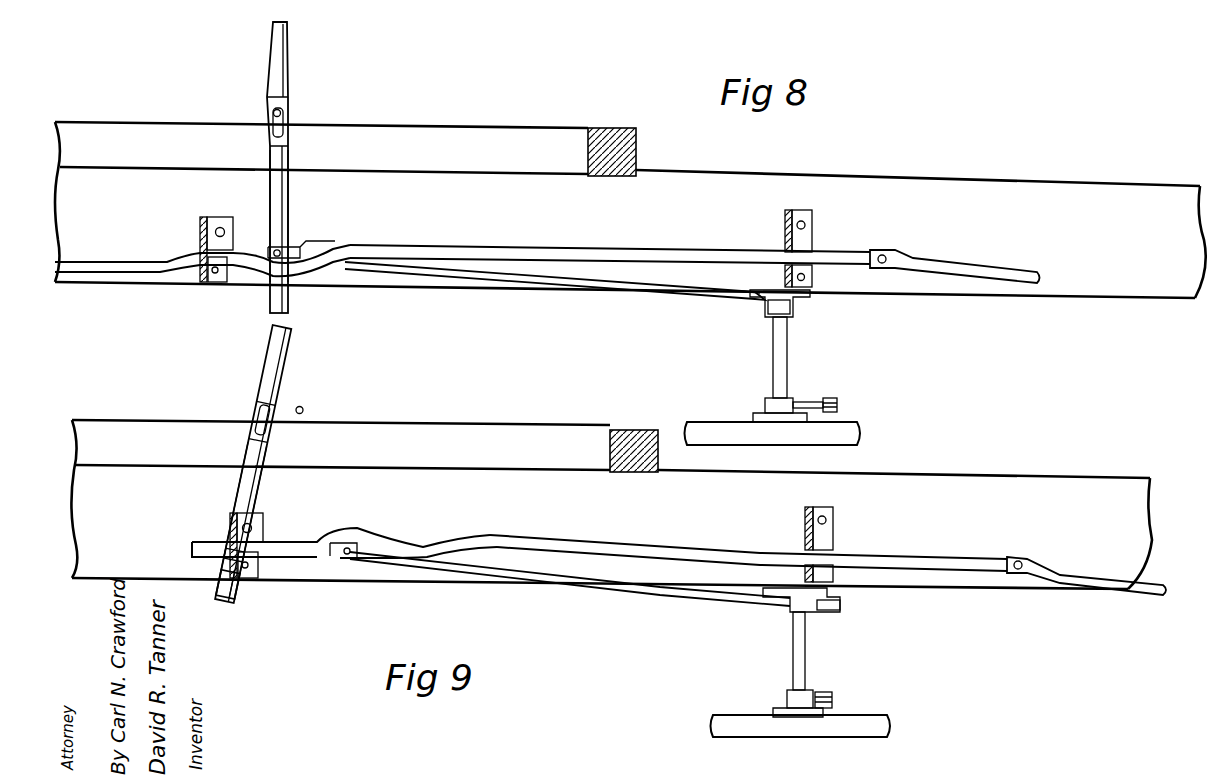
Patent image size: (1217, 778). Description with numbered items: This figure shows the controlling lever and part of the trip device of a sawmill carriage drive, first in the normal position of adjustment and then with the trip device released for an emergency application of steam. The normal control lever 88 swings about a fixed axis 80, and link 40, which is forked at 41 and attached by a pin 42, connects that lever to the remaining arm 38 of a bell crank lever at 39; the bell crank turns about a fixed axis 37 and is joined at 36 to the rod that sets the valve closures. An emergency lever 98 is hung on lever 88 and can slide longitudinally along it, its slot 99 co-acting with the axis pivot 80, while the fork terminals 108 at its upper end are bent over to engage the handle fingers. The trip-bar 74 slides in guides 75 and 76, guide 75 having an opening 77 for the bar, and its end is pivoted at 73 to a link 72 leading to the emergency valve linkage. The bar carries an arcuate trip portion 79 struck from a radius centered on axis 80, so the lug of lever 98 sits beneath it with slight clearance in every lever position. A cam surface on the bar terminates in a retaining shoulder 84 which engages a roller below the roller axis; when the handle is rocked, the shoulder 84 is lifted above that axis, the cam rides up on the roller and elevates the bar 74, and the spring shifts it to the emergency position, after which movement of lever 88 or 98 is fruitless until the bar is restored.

In FIG. 8, the connection of rod with bell crank lever 36 is at (832, 397).
In FIG. 9, the connection of rod with bell crank lever 36 is at (830, 692).
In FIG. 8, the fixed axis of bell crank lever 37 is at (787, 360).
In FIG. 9, the fixed axis of bell crank lever 37 is at (806, 656).
In FIG. 8, the remaining arm of bell crank lever 38 is at (810, 402).
In FIG. 8, the connection of arm with link 39 is at (772, 308).
In FIG. 9, the connection of arm with link 39 is at (842, 604).
In FIG. 8, the link 40 is at (660, 292).
In FIG. 9, the link 40 is at (700, 596).
In FIG. 8, the forked end of link 41 is at (293, 255).
In FIG. 9, the forked end of link 41 is at (352, 548).
In FIG. 8, the pin 42 is at (280, 250).
In FIG. 8, the link 72 is at (977, 272).
In FIG. 9, the link 72 is at (1082, 580).
In FIG. 8, the pivot of link and trip-bar 73 is at (884, 256).
In FIG. 9, the pivot of link and trip-bar 73 is at (1019, 561).
In FIG. 8, the trip-bar 74 is at (576, 247).
In FIG. 9, the trip-bar 74 is at (588, 538).
In FIG. 8, the guide 75 is at (813, 214).
In FIG. 9, the guide 75 is at (835, 513).
In FIG. 8, the guide 76 is at (218, 217).
In FIG. 9, the guide 76 is at (247, 513).
In FIG. 8, the opening in guide 77 is at (785, 250).
In FIG. 9, the opening in guide 77 is at (806, 548).
In FIG. 8, the arcuate trip portion 79 is at (315, 268).
In FIG. 9, the arcuate trip portion 79 is at (428, 545).
In FIG. 8, the axis of control lever 80 is at (285, 108).
In FIG. 9, the axis of control lever 80 is at (306, 408).
In FIG. 9, the retaining shoulder 84 is at (322, 562).
In FIG. 8, the normal control lever 88 is at (270, 78).
In FIG. 9, the normal control lever 88 is at (278, 396).
In FIG. 8, the emergency lever 98 is at (280, 68).
In FIG. 9, the emergency lever 98 is at (292, 372).
In FIG. 8, the slot 99 is at (285, 122).
In FIG. 9, the slot 99 is at (312, 417).
In FIG. 8, the fork terminals 108 is at (272, 290).
In FIG. 9, the fork terminals 108 is at (330, 588).